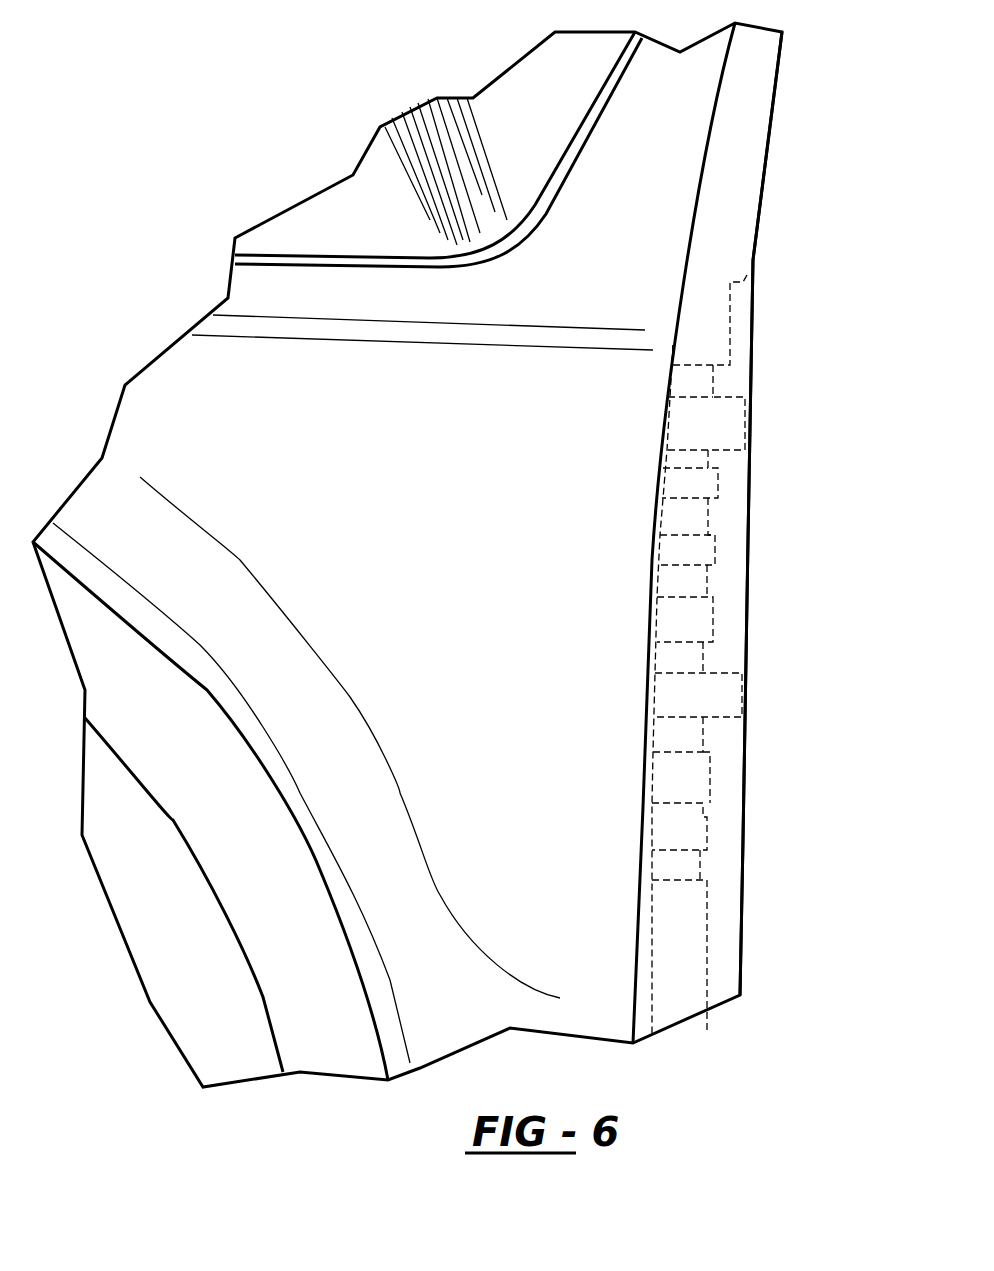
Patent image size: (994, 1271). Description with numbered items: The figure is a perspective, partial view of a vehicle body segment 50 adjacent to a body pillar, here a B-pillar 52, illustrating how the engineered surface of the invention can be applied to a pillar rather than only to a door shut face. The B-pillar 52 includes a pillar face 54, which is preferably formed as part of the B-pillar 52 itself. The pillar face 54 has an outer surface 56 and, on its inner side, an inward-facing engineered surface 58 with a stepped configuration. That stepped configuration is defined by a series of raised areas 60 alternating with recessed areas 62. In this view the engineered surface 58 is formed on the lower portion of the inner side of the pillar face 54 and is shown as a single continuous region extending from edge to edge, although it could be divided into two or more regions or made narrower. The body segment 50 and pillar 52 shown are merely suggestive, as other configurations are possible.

The vehicle body segment 50 is at (414, 543).
The B-pillar 52 is at (730, 175).
The pillar face 54 is at (718, 233).
The outer surface 56 is at (732, 370).
The engineered surface 58 is at (730, 690).
The raised areas 60 is at (693, 517).
The recessed areas 62 is at (703, 550).